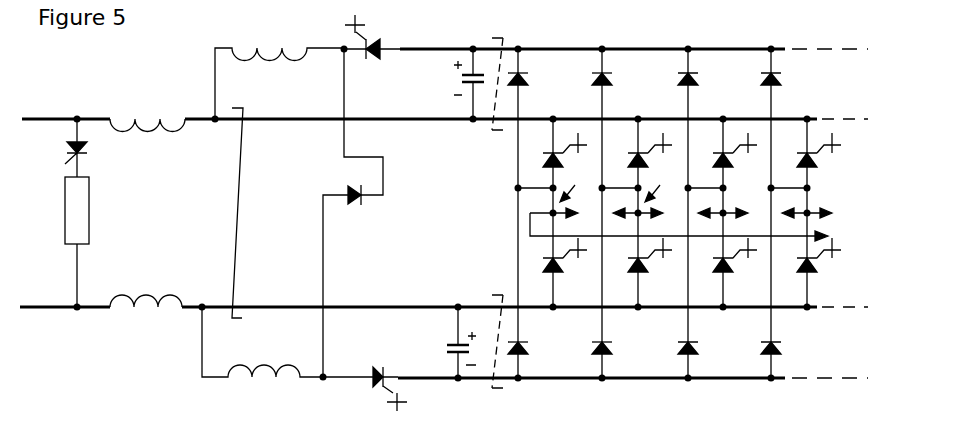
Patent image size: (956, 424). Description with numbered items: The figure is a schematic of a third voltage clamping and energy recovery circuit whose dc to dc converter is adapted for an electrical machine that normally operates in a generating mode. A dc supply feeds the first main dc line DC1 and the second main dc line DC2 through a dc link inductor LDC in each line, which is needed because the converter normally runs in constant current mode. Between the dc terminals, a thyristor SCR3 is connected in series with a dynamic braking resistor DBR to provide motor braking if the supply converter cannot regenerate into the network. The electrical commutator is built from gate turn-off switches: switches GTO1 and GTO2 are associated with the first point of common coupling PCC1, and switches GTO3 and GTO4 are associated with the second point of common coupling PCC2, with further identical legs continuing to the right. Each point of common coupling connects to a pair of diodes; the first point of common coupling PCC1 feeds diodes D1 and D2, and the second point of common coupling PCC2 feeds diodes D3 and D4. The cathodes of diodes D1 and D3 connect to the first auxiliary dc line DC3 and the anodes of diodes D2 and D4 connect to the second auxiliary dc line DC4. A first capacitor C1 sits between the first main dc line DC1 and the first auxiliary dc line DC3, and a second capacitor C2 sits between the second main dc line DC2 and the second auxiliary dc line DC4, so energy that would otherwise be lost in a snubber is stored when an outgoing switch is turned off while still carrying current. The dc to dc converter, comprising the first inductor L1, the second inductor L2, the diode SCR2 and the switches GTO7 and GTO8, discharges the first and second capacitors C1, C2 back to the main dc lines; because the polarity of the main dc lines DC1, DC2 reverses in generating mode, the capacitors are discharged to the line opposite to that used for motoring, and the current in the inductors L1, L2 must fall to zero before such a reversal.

The dc link inductor LDC is at (147, 213).
The thyristor SCR3 is at (109, 148).
The dynamic braking resistor DBR is at (51, 242).
The second inductor L2 is at (279, 71).
The first inductor L1 is at (262, 354).
The first main dc line DC1 is at (445, 105).
The second main dc line DC2 is at (444, 321).
The first auxiliary dc line DC3 is at (634, 37).
The second auxiliary dc line DC4 is at (633, 394).
The gate turn-off thyristor GTO7 is at (389, 37).
The gate turn-off thyristor GTO8 is at (363, 392).
The diode SCR2 is at (360, 213).
The first capacitor C1 is at (458, 84).
The second capacitor C2 is at (446, 342).
The diode D1 is at (531, 94).
The diode D2 is at (530, 362).
The diode D3 is at (615, 94).
The diode D4 is at (614, 362).
The switch GTO1 is at (555, 158).
The switch GTO2 is at (555, 269).
The switch GTO3 is at (640, 158).
The switch GTO4 is at (640, 269).
The first point of common coupling PCC1 is at (565, 183).
The second point of common coupling PCC2 is at (649, 183).